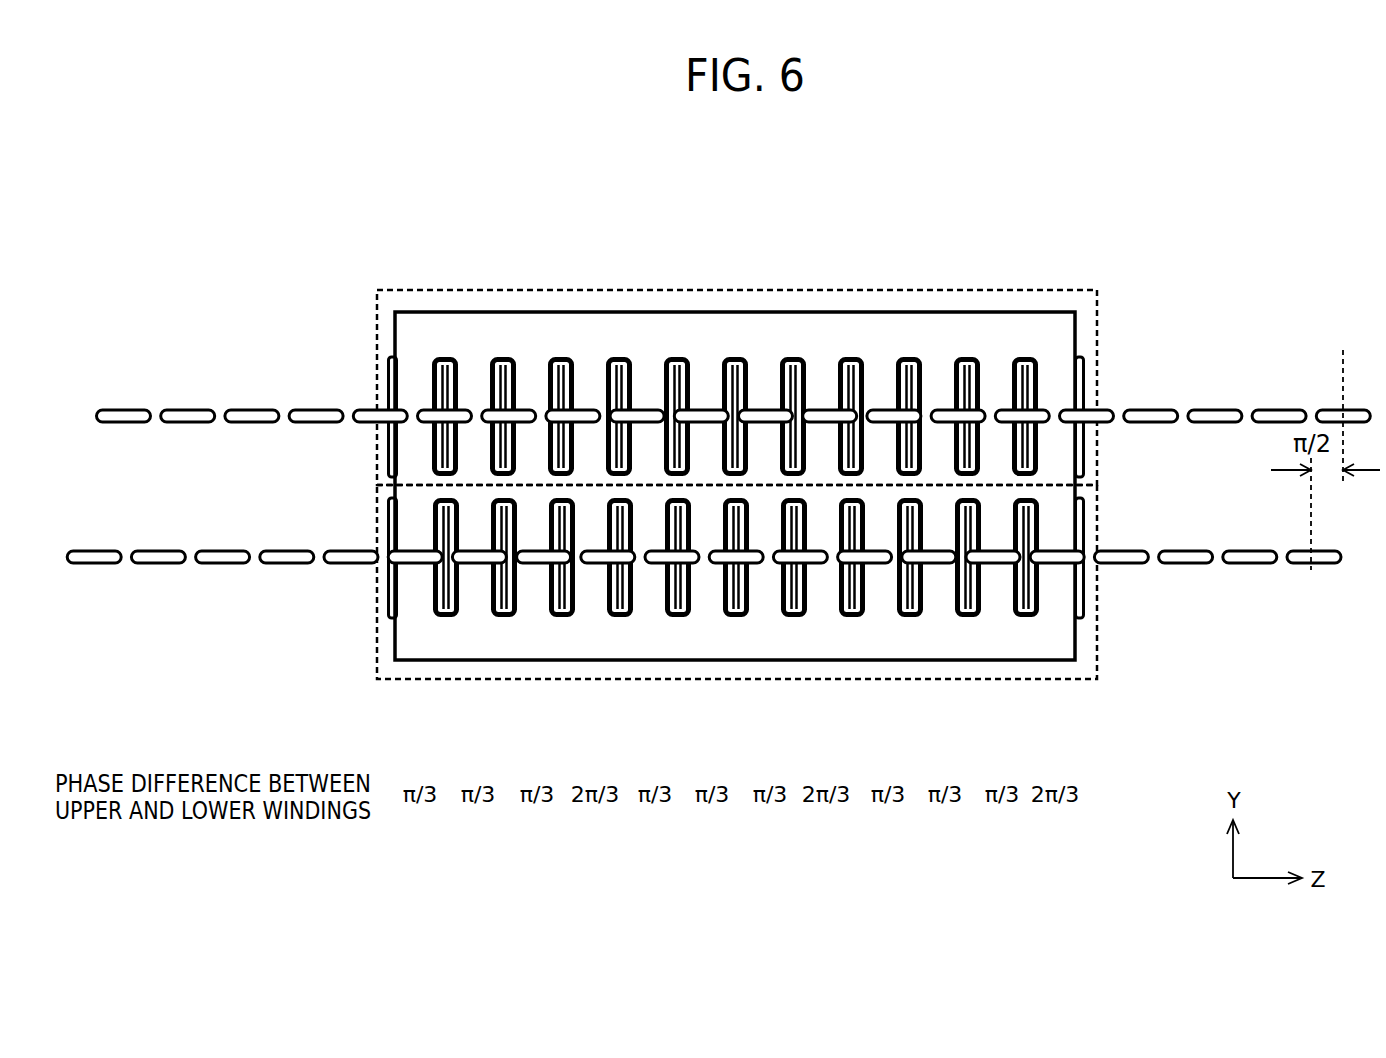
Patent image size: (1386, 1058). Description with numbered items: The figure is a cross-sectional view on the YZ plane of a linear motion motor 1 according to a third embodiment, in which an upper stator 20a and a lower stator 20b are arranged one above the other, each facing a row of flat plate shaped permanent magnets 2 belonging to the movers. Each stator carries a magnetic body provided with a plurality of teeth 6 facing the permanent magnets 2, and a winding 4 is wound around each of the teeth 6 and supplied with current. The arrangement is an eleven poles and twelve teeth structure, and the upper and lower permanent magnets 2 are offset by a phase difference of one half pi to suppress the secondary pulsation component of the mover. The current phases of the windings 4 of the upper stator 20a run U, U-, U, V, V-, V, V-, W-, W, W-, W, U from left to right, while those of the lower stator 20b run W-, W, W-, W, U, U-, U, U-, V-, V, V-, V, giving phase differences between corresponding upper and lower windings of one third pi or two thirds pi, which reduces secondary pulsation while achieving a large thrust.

The linear motion motor 1 is at (291, 210).
The permanent magnet 2 is at (188, 414).
The winding 4 is at (388, 376).
The teeth 6 is at (749, 491).
The upper stator 20a is at (1097, 330).
The lower stator 20b is at (1099, 630).